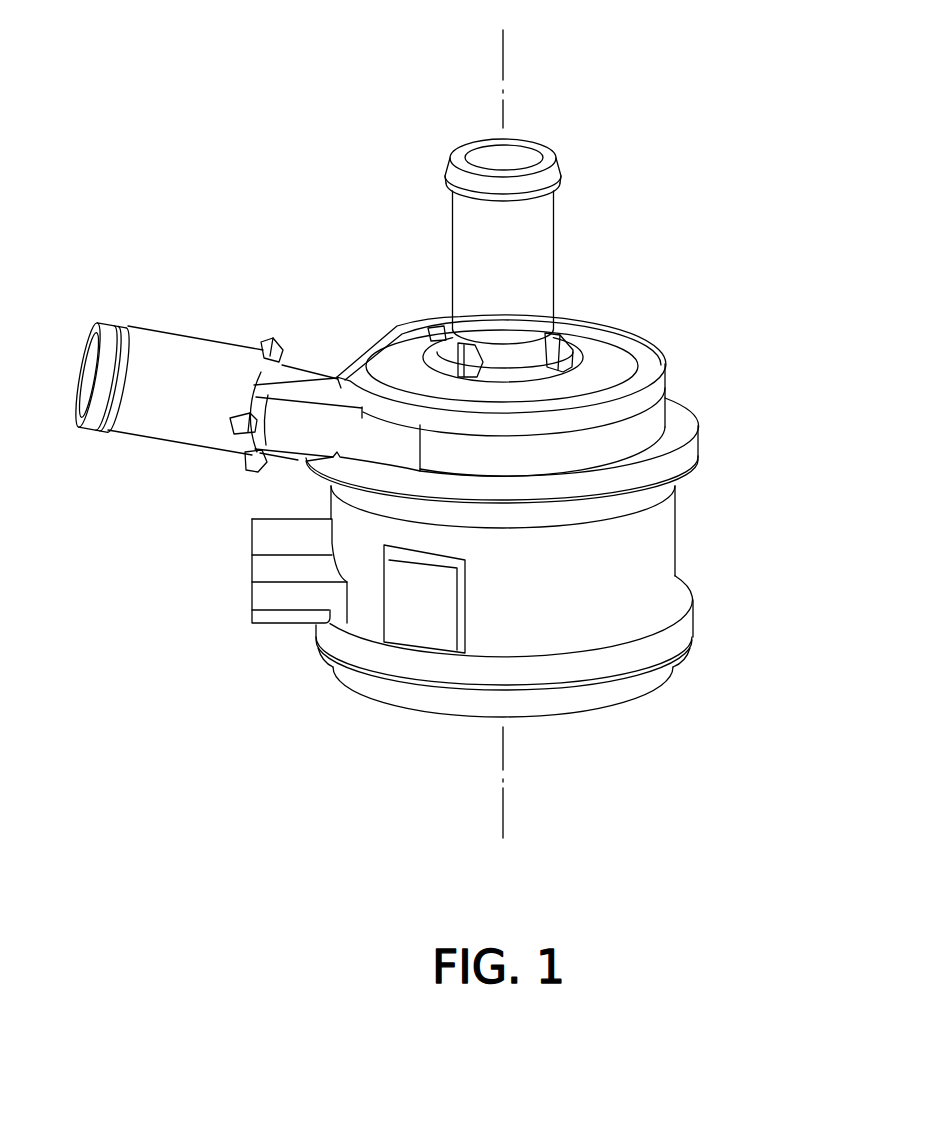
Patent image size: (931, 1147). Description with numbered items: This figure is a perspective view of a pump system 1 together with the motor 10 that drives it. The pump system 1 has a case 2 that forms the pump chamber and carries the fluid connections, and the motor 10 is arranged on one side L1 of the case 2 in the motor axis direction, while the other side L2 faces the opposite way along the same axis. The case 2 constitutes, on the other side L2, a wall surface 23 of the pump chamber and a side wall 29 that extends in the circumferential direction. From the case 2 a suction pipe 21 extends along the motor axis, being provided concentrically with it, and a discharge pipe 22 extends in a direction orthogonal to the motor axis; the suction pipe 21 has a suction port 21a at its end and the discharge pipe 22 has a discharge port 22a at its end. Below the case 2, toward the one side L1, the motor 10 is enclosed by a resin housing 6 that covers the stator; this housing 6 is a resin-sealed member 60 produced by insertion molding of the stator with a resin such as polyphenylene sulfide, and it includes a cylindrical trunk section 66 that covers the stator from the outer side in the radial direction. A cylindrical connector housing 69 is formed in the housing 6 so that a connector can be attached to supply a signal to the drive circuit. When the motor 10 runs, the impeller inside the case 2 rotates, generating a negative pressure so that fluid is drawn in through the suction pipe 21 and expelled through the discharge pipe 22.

The pump system 1 is at (666, 178).
The case 2 is at (703, 432).
The housing 6 is at (668, 550).
The resin-sealed member 60 is at (488, 581).
The motor 10 is at (710, 626).
The suction pipe 21 is at (545, 255).
The suction port 21a is at (521, 155).
The discharge pipe 22 is at (190, 352).
The discharge port 22a is at (93, 340).
The wall surface 23 is at (612, 356).
The side wall 29 is at (657, 415).
The cylindrical trunk section 66 is at (608, 612).
The connector housing 69 is at (267, 602).
The one side in the motor axis direction L1 is at (500, 800).
The other side in the motor axis direction L2 is at (505, 65).